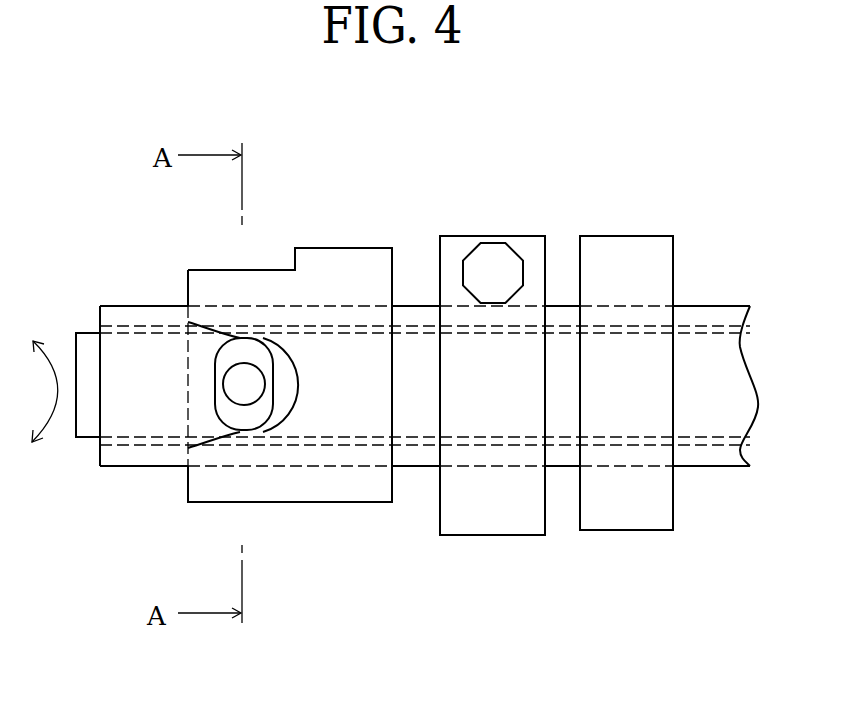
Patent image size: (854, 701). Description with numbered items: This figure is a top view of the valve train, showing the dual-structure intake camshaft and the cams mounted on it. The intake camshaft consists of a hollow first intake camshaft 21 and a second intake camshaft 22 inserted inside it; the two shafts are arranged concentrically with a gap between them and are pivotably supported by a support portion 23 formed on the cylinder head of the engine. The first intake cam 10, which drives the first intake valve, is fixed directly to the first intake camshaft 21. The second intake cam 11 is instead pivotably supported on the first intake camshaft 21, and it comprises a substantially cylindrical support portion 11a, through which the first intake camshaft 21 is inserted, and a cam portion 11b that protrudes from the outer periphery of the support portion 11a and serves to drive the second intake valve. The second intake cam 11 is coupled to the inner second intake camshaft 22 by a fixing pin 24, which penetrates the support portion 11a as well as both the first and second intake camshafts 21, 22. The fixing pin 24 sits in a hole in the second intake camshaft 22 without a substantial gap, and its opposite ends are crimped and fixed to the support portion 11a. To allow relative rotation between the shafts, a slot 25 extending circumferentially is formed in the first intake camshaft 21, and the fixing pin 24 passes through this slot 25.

The first intake cam 10 is at (608, 243).
The second intake cam 11 is at (290, 322).
The support portion 11a is at (260, 267).
The cam portion 11b is at (360, 247).
The first intake camshaft 21 is at (143, 312).
The second intake camshaft 22 is at (88, 343).
The support portion 23 is at (460, 243).
The fixing pin 24 is at (233, 395).
The slot 25 is at (230, 353).